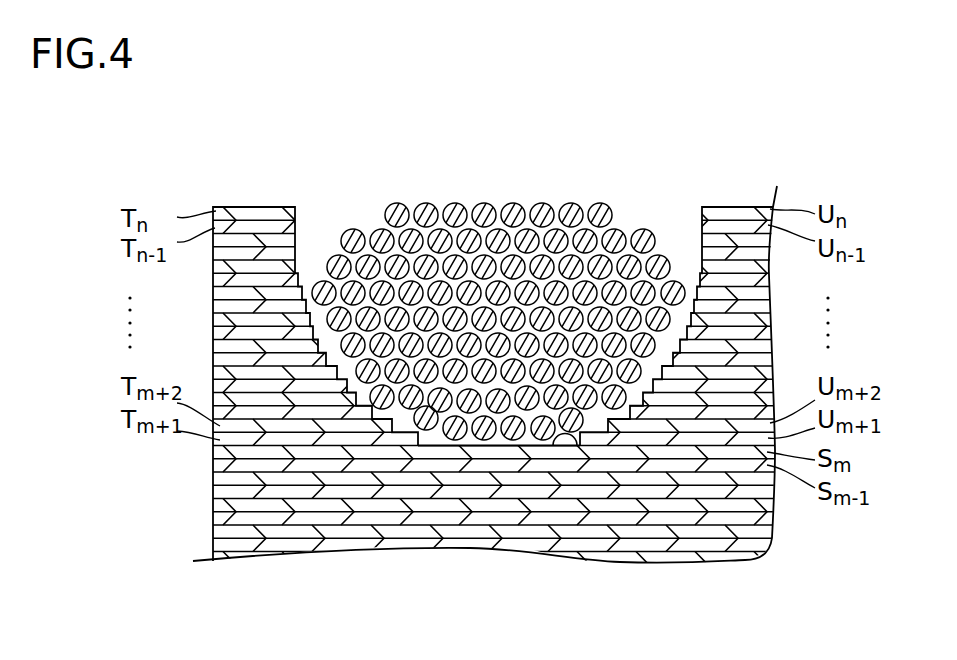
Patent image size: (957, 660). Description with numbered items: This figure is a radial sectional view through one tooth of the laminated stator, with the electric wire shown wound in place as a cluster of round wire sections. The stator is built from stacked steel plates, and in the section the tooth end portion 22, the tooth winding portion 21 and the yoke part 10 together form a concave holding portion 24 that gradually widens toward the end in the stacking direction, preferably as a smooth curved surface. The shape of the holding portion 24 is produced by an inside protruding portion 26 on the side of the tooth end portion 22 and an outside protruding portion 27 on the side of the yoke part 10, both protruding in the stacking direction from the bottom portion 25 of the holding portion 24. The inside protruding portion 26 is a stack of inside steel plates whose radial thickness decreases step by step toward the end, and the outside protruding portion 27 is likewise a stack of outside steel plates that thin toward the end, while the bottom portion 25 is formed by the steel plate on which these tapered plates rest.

The yoke part 10 is at (757, 200).
The tooth winding portion 21 is at (472, 545).
The tooth end portion 22 is at (287, 197).
The holding portion 24 is at (297, 263).
The bottom portion 25 is at (573, 445).
The inside protruding portion 26 is at (244, 212).
The outside protruding portion 27 is at (717, 211).